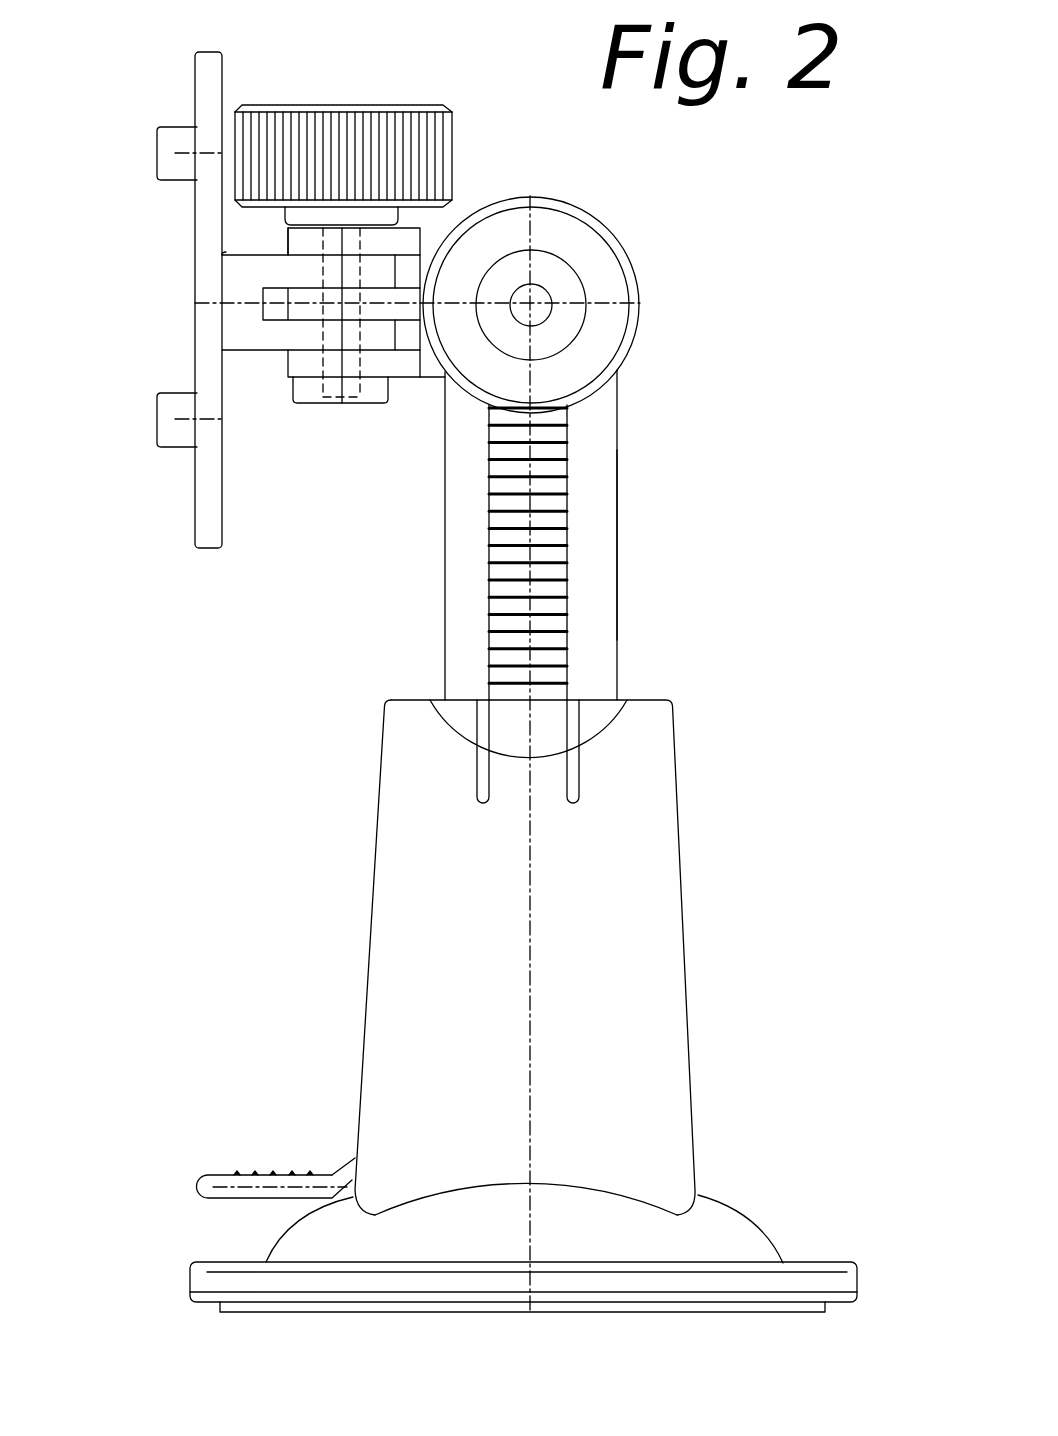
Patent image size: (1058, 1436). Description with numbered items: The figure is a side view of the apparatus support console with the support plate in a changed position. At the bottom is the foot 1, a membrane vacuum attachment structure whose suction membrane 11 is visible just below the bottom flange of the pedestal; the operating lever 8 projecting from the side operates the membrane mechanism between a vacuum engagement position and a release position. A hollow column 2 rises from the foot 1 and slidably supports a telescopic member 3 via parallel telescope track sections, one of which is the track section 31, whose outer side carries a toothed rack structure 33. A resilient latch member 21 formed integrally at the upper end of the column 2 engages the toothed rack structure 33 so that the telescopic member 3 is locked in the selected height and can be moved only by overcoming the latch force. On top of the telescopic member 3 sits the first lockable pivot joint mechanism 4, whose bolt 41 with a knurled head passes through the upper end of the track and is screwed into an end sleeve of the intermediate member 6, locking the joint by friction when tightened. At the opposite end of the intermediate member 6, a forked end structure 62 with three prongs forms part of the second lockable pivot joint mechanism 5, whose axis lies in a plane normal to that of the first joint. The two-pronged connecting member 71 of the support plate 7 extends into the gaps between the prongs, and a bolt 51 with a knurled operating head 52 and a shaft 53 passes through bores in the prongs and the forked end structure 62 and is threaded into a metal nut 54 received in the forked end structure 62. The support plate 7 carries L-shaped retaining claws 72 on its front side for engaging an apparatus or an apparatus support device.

The foot 1 is at (713, 1245).
The suction membrane 11 is at (500, 1307).
The column 2 is at (655, 942).
The resilient latch member 21 is at (542, 727).
The telescopic member 3 is at (630, 470).
The telescope track section 31 is at (600, 558).
The toothed rack structure 33 is at (548, 588).
The first lockable pivot joint mechanism 4 is at (622, 227).
The bolt 41 is at (617, 282).
The second lockable pivot joint mechanism 5 is at (342, 437).
The bolt 51 is at (342, 135).
The knurled operating head 52 is at (437, 110).
The shaft 53 is at (330, 277).
The metal nut 54 is at (310, 393).
The intermediate member 6 is at (432, 242).
The forked end structure 62 is at (363, 367).
The support plate 7 is at (203, 252).
The two-pronged connecting member 71 is at (253, 330).
The L-shaped retaining claws 72 is at (172, 140).
The operating lever 8 is at (213, 1185).